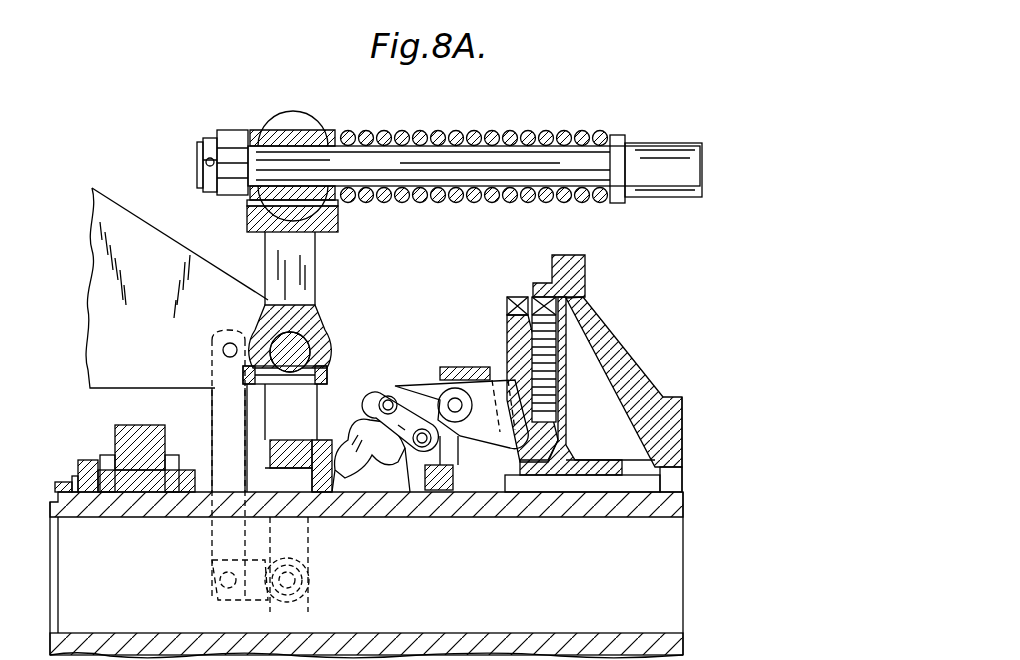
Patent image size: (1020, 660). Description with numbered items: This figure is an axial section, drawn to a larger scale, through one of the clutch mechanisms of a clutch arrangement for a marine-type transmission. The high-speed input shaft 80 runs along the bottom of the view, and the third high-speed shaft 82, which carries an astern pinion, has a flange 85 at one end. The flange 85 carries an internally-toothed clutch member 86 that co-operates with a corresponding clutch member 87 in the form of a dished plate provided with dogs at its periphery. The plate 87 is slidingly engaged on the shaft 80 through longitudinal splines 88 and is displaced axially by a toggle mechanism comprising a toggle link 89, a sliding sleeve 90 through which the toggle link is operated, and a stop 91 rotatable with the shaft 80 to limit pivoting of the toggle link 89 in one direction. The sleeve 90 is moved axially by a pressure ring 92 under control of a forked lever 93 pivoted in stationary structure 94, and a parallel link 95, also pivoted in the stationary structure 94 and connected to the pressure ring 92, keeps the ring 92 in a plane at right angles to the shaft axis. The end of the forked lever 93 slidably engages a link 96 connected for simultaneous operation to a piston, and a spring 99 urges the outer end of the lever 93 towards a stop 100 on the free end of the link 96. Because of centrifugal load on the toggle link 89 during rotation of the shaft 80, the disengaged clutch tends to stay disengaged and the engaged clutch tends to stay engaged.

The high-speed input shaft 80 is at (540, 505).
The third high-speed shaft 82 is at (668, 400).
The flange 85 is at (585, 312).
The internally-toothed clutch member 86 is at (540, 288).
The clutch member 87 is at (515, 318).
The longitudinal splines 88 is at (625, 492).
The toggle link 89 is at (388, 394).
The sliding sleeve 90 is at (330, 492).
The stop 91 is at (455, 398).
The pressure ring 92 is at (287, 440).
The forked lever 93 is at (312, 435).
The stationary structure 94 is at (115, 215).
The parallel link 95 is at (218, 405).
The link 96 is at (415, 160).
The spring 99 is at (500, 132).
The stop 100 is at (215, 125).